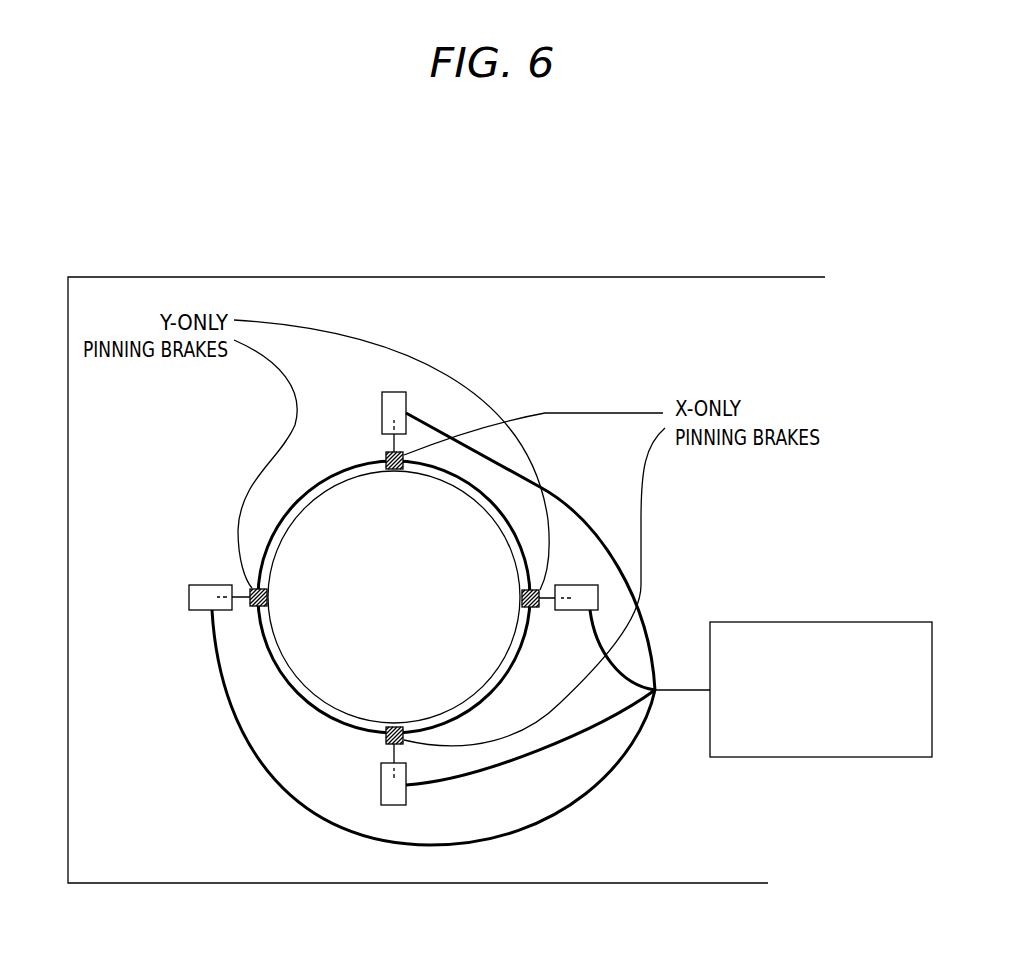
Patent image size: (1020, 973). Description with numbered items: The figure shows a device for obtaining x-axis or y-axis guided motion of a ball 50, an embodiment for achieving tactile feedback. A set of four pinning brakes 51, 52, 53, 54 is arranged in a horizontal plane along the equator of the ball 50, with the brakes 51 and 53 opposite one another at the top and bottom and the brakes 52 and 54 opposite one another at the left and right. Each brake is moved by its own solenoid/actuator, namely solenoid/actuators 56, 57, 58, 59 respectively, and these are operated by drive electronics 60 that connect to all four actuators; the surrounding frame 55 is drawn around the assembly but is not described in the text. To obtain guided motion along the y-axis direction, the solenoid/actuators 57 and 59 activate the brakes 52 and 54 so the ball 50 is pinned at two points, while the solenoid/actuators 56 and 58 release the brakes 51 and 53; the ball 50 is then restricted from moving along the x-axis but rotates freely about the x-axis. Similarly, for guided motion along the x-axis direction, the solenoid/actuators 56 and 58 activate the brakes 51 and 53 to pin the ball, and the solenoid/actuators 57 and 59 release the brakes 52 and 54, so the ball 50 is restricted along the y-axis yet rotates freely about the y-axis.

The ball 50 is at (326, 714).
The pinning brake 51 is at (385, 456).
The pinning brake 52 is at (257, 608).
The pinning brake 53 is at (387, 746).
The pinning brake 54 is at (537, 609).
The frame / base plate 55 is at (580, 883).
The solenoid/actuator 56 is at (381, 398).
The solenoid/actuator 57 is at (188, 597).
The solenoid/actuator 58 is at (407, 796).
The solenoid/actuator 59 is at (587, 584).
The drive electronics 60 is at (822, 621).